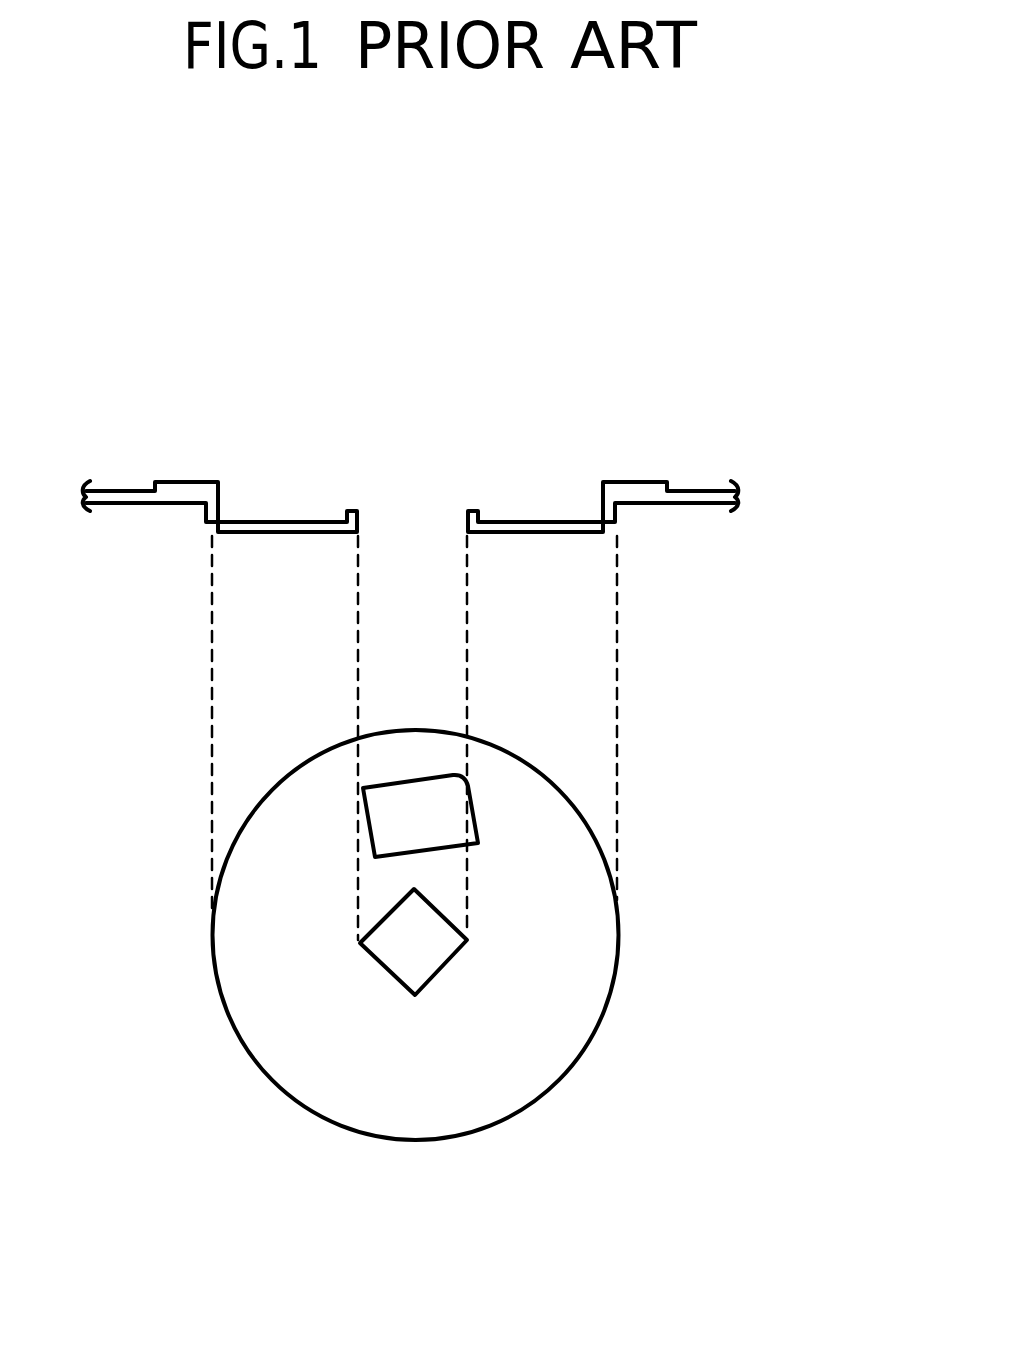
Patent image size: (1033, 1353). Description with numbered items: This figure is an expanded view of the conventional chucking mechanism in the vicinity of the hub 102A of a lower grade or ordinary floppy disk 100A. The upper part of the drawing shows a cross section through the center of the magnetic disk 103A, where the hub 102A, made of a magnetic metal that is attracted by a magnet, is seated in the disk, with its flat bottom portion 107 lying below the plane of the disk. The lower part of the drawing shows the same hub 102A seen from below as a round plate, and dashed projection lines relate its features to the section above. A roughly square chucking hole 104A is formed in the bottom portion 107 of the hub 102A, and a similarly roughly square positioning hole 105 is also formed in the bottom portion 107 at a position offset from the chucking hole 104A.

The floppy disk 100A is at (703, 401).
The hub 102A is at (579, 541).
The magnetic disk 103A is at (721, 506).
The chucking hole 104A is at (422, 515).
The positioning hole 105 is at (392, 813).
The bottom portion 107 is at (273, 520).